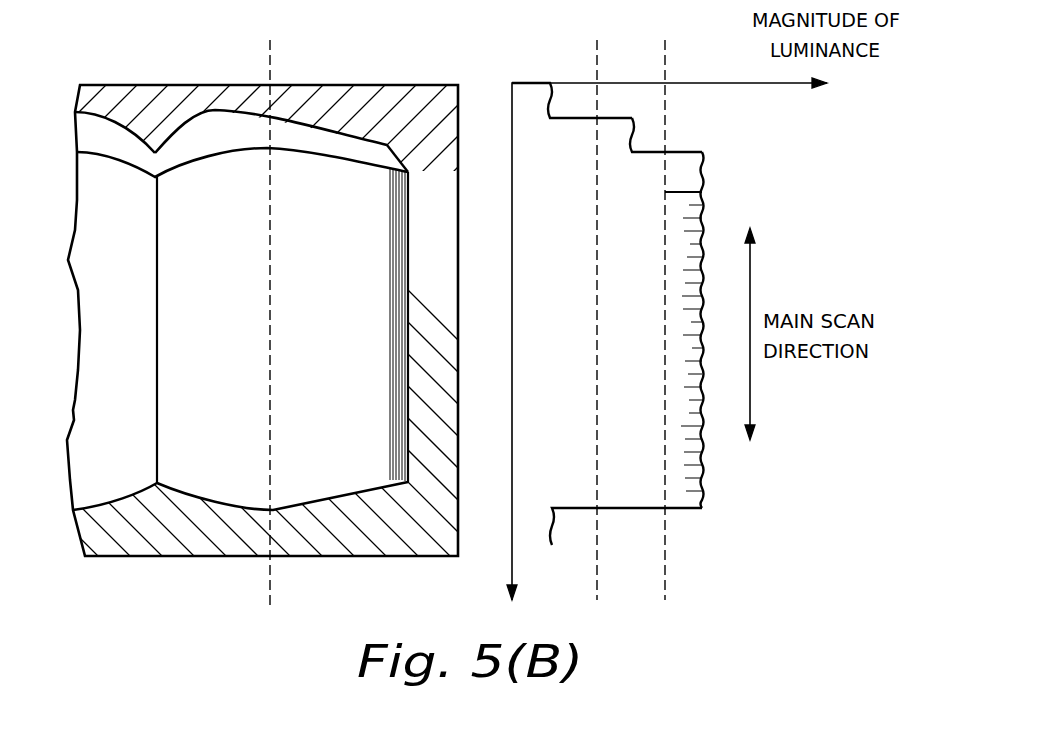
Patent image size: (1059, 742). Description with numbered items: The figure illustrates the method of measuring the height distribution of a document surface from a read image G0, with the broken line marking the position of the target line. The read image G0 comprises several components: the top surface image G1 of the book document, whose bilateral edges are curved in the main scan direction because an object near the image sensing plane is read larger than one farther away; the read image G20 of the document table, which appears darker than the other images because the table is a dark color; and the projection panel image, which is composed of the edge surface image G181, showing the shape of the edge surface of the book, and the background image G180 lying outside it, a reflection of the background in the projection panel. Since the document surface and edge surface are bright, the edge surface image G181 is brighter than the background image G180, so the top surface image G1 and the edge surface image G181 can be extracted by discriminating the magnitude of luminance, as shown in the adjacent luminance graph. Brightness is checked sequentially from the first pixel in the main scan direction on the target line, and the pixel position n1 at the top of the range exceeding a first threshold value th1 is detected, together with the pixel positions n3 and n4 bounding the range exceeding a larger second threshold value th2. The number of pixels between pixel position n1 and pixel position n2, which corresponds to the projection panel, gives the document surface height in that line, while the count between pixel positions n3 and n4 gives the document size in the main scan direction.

The read image G0 is at (370, 82).
The background image G180 is at (117, 93).
The edge surface image G181 is at (220, 107).
The top surface image G1 is at (235, 345).
The read image of document table G20 is at (397, 547).
The first threshold value th1 is at (597, 307).
The second threshold value th2 is at (664, 307).
The pixel position n1 is at (270, 118).
The pixel position n2 is at (408, 172).
The pixel position n3 is at (330, 153).
The pixel position n4 is at (73, 509).